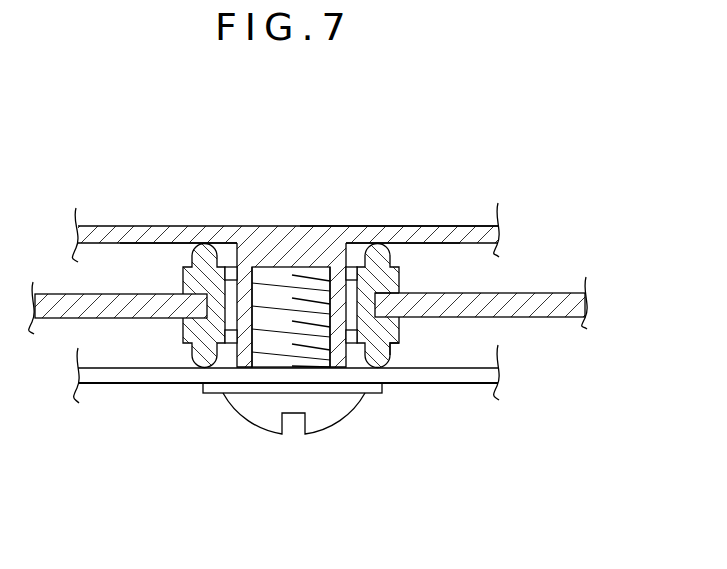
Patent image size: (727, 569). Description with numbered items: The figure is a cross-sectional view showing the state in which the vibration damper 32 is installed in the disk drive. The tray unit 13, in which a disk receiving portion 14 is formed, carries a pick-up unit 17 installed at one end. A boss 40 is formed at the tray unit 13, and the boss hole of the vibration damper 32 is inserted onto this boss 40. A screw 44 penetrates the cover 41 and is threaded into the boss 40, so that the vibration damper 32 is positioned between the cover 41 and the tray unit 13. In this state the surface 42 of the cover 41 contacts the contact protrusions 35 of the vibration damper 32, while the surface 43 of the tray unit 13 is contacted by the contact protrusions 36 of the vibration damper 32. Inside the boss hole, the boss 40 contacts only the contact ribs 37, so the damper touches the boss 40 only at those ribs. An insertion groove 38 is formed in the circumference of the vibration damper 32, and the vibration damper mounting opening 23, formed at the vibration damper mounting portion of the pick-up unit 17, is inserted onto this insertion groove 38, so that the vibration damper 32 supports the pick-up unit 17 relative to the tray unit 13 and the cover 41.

The tray unit 13 is at (420, 241).
The disk receiving portion 14 is at (457, 226).
The pick-up unit 17 is at (558, 292).
The vibration damper mounting opening 23 is at (215, 302).
The vibration damper 32 is at (393, 350).
The contact protrusions 35 is at (385, 366).
The contact protrusions 36 is at (206, 255).
The contact ribs 37 is at (330, 277).
The insertion groove 38 is at (378, 297).
The boss 40 is at (228, 258).
The cover 41 is at (120, 378).
The surface 42 is at (140, 367).
The surface 43 is at (120, 247).
The screw 44 is at (217, 392).